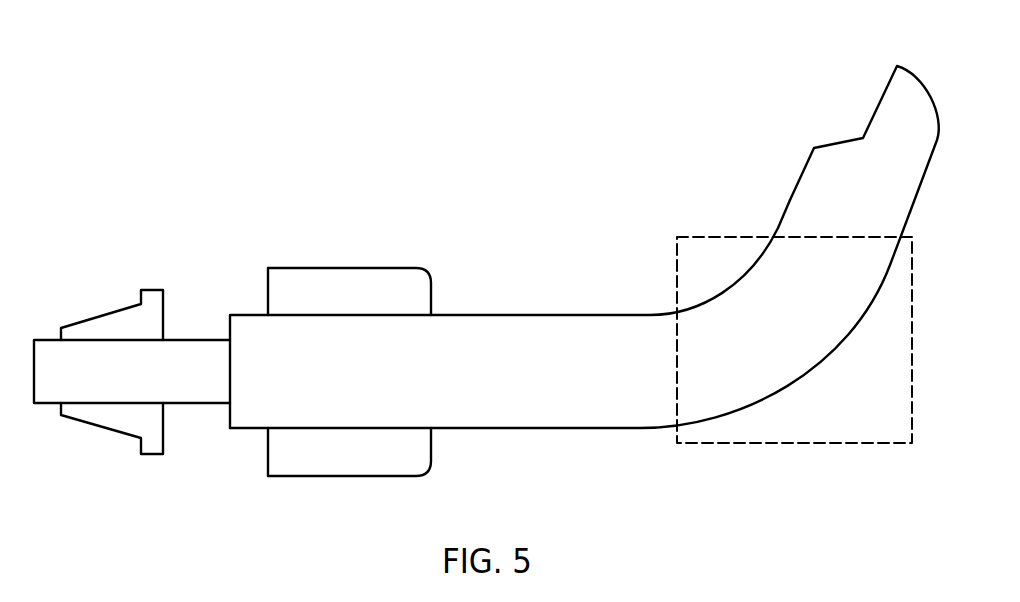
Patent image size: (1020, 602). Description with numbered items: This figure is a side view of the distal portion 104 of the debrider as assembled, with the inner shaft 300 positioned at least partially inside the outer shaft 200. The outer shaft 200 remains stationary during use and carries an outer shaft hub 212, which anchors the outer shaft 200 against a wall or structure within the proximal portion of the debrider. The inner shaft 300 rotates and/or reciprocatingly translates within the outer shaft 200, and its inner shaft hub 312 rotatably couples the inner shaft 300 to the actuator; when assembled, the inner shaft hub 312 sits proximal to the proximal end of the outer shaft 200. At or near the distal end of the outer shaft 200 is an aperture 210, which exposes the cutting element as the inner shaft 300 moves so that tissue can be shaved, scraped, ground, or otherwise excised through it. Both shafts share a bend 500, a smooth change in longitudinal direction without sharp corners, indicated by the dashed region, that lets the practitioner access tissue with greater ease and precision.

The distal portion 104 is at (201, 48).
The outer shaft 200 is at (537, 313).
The aperture 210 is at (850, 118).
The outer shaft hub 212 is at (342, 267).
The inner shaft 300 is at (192, 338).
The inner shaft hub 312 is at (102, 315).
The bend 500 is at (728, 235).